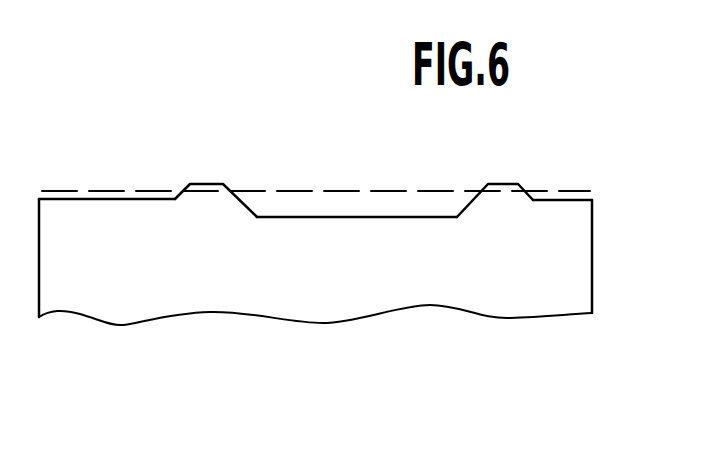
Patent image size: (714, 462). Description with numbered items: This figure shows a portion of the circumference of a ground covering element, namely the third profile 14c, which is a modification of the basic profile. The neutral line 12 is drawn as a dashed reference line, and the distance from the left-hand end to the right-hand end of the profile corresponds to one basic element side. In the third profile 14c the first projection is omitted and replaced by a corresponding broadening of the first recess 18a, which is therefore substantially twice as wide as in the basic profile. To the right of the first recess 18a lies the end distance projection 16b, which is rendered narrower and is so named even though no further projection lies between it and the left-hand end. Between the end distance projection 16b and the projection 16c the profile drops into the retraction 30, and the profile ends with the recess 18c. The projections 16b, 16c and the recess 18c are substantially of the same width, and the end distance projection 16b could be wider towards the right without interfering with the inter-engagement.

The neutral line 12 is at (390, 190).
The third profile 14c is at (303, 213).
The end distance projection 16b is at (215, 186).
The projection 16c is at (508, 186).
The first recess 18a is at (95, 201).
The recess 18c is at (562, 202).
The retraction 30 is at (362, 218).